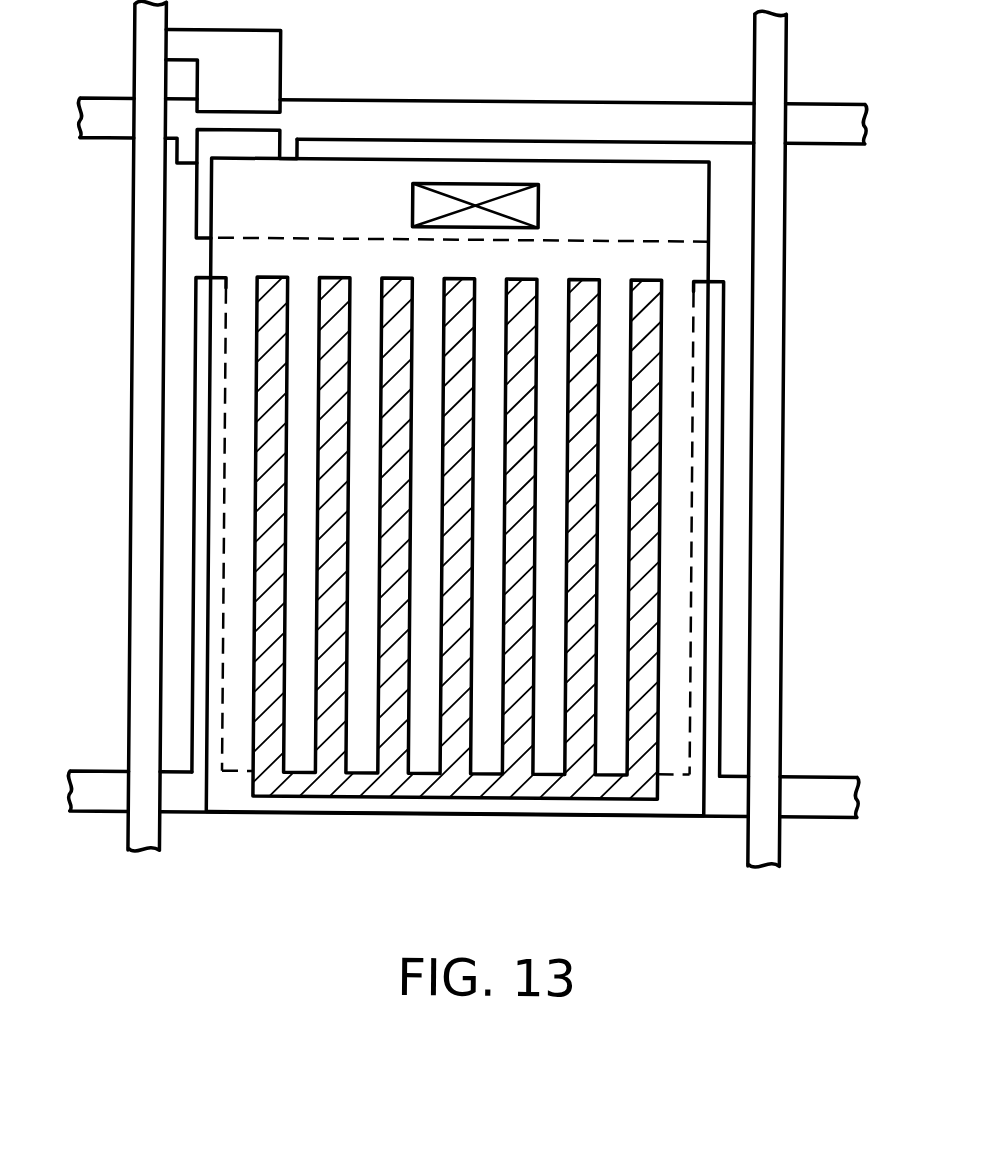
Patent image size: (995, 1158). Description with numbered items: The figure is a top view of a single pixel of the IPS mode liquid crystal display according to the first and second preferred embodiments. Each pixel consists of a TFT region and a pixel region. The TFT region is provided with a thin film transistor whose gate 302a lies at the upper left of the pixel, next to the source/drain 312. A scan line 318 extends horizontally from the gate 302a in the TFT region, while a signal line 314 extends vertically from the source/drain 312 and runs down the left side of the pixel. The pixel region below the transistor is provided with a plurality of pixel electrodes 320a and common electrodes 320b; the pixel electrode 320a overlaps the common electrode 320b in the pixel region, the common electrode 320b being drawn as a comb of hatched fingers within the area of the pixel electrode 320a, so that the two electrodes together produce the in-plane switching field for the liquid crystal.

The source/drain 312 is at (269, 62).
The scan line 318 is at (502, 100).
The gate 302a is at (182, 155).
The signal line 314 is at (147, 469).
The pixel electrode 320a is at (612, 427).
The common electrode 320b is at (644, 626).